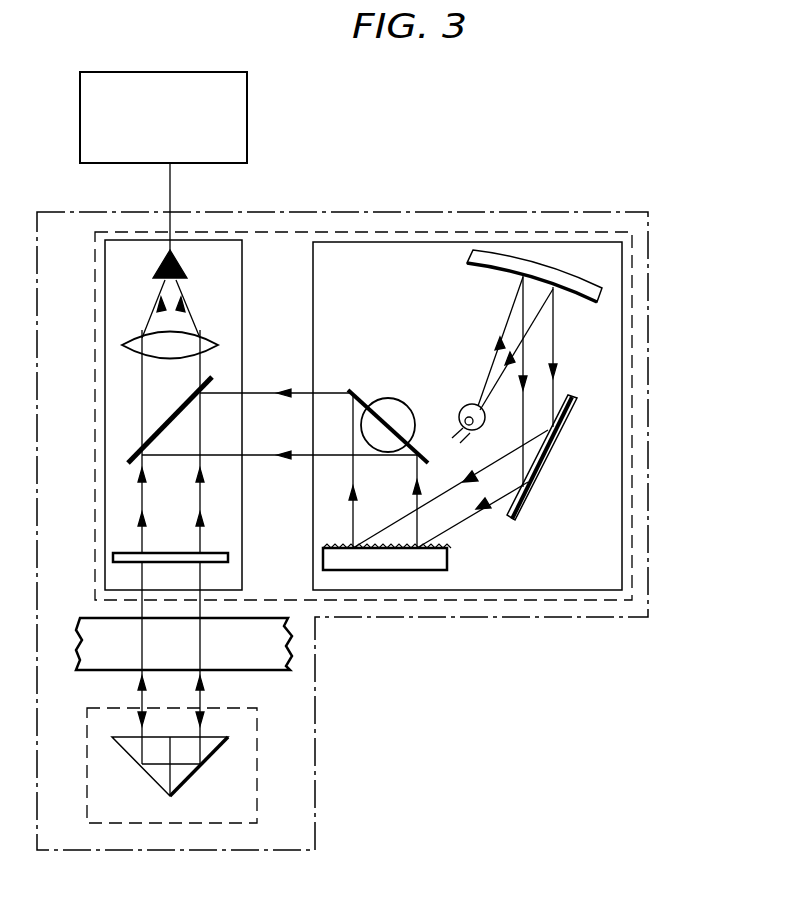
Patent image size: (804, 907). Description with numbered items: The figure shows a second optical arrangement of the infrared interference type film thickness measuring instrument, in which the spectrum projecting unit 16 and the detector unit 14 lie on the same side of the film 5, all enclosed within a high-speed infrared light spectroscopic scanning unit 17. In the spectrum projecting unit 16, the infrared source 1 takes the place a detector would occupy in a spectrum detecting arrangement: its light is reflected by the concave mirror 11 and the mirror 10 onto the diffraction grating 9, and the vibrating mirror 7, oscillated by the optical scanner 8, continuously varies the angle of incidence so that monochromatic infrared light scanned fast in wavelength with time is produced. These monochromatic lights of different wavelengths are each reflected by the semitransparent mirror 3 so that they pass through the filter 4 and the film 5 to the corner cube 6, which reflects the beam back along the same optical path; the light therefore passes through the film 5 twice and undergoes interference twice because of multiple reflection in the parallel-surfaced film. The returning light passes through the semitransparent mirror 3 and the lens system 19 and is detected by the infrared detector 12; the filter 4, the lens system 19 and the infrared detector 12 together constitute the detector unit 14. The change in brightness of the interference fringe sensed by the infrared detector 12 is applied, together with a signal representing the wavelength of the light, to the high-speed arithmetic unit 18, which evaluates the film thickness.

The infrared source 1 is at (463, 408).
The semitransparent mirror 3 is at (133, 458).
The filter 4 is at (118, 552).
The film 5 is at (100, 618).
The corner cube 6 is at (128, 755).
The vibrating mirror 7 is at (352, 392).
The optical scanner 8 is at (388, 398).
The diffraction grating 9 is at (435, 558).
The mirror 10 is at (542, 460).
The concave mirror 11 is at (577, 283).
The infrared detector 12 is at (160, 268).
The detector unit 14 is at (242, 270).
The spectrum projecting unit 16 is at (508, 232).
The high-speed infrared light spectroscopic scanning unit 17 is at (381, 618).
The high-speed arithmetic unit 18 is at (247, 104).
The lens system 19 is at (128, 345).